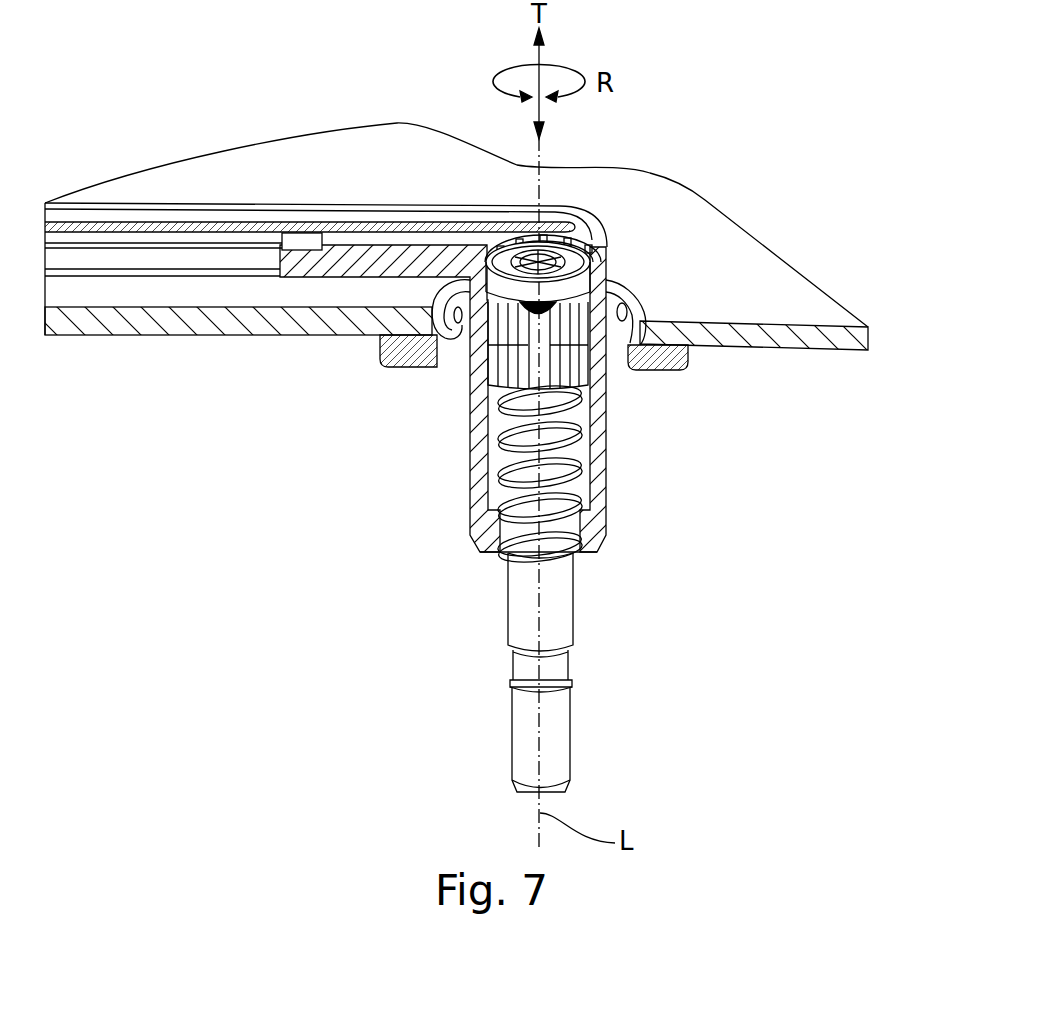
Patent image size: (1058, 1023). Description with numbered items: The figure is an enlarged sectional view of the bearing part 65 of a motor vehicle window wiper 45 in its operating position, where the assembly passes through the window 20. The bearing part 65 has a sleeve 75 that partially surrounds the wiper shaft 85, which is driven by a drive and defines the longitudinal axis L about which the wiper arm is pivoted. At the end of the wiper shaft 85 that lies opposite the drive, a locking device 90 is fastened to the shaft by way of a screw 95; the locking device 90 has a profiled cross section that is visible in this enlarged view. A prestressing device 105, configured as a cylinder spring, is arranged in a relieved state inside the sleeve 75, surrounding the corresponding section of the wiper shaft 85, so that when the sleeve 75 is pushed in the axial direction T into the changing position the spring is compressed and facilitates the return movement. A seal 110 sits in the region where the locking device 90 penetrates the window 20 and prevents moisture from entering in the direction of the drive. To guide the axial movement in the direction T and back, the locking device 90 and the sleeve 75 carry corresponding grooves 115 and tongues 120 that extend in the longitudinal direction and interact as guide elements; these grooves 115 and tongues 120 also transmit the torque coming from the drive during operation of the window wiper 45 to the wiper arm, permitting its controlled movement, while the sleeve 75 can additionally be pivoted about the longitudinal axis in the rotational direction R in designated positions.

The window 20 is at (868, 327).
The motor vehicle window wiper 45 is at (641, 80).
The bearing part 65 is at (350, 255).
The sleeve 75 is at (482, 418).
The wiper shaft 85 is at (555, 455).
The locking device 90 is at (630, 297).
The screw 95 is at (609, 265).
The prestressing device 105 is at (497, 457).
The seal 110 is at (690, 360).
The grooves 115 is at (586, 216).
The tongues 120 is at (594, 343).